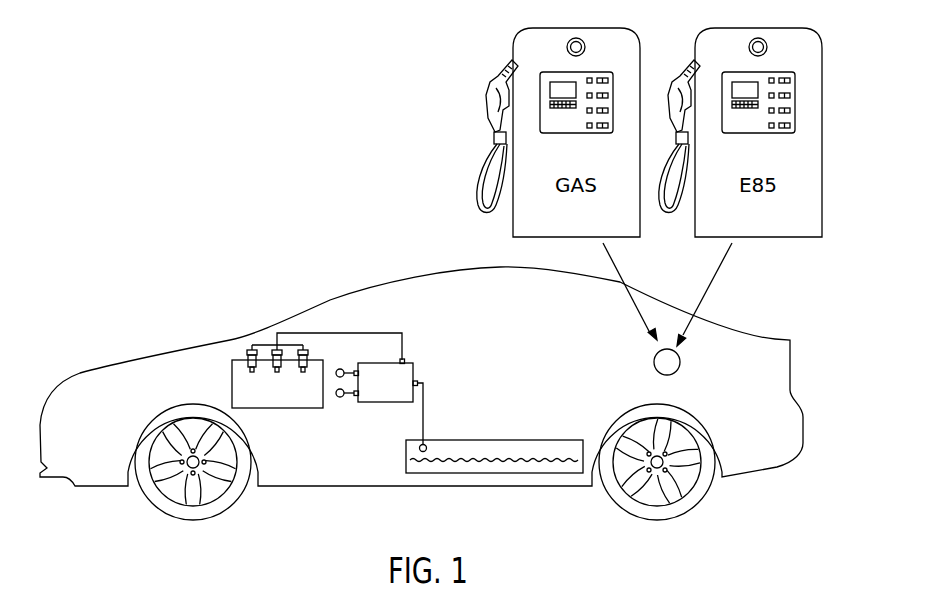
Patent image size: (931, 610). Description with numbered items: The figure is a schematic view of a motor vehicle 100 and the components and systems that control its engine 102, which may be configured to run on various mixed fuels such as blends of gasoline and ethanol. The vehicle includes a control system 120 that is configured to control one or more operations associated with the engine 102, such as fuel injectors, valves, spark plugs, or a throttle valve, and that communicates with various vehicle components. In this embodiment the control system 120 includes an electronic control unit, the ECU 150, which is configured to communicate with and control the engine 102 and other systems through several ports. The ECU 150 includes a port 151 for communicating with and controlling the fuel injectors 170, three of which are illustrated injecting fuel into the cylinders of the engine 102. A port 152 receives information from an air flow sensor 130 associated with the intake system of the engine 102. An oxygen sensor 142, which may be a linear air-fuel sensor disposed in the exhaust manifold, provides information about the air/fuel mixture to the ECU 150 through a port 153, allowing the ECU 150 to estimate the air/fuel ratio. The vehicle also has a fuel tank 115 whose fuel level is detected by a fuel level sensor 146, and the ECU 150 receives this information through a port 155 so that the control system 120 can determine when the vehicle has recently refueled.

The motor vehicle 100 is at (308, 216).
The engine 102 is at (232, 386).
The fuel tank 115 is at (534, 440).
The control system 120 is at (405, 318).
The air flow sensor 130 is at (338, 397).
The oxygen sensor 142 is at (338, 369).
The fuel level sensor 146 is at (427, 445).
The electronic control unit 150 is at (389, 403).
The port 151 is at (405, 361).
The port 152 is at (355, 397).
The port 153 is at (356, 370).
The port 155 is at (418, 381).
The fuel injectors 170 is at (242, 325).